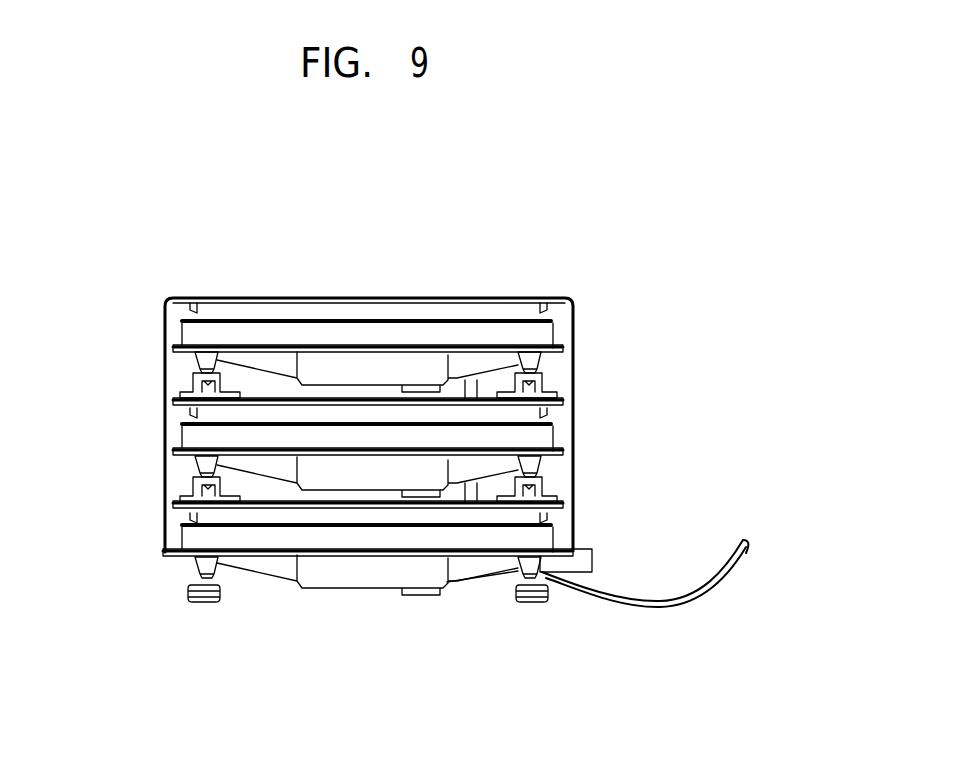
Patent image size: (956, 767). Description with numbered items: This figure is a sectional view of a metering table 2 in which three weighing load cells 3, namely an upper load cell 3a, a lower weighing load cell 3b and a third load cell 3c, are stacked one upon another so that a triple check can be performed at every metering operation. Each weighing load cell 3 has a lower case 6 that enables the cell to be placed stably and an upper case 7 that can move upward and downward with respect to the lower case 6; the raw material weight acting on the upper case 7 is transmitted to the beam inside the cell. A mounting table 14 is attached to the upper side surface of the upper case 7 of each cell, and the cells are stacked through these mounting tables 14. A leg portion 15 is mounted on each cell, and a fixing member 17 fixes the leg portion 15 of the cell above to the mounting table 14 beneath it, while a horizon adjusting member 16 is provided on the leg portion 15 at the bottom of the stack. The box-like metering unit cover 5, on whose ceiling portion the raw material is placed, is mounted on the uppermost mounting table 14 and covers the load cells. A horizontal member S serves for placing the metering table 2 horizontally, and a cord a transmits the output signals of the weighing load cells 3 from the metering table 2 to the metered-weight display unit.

The metering table 2 is at (495, 268).
The weighing load cell 3 is at (560, 375).
The upper load cell 3a is at (327, 368).
The lower weighing load cell 3b is at (413, 472).
The third load cell 3c is at (360, 578).
The metering unit cover 5 is at (545, 300).
The lower case 6 is at (465, 570).
The upper case 7 is at (540, 537).
The mounting table 14 is at (421, 317).
The leg portion 15 is at (207, 360).
The horizon adjusting member 16 is at (527, 605).
The fixing member 17 is at (193, 382).
The horizontal member S is at (573, 550).
The cord a is at (673, 605).